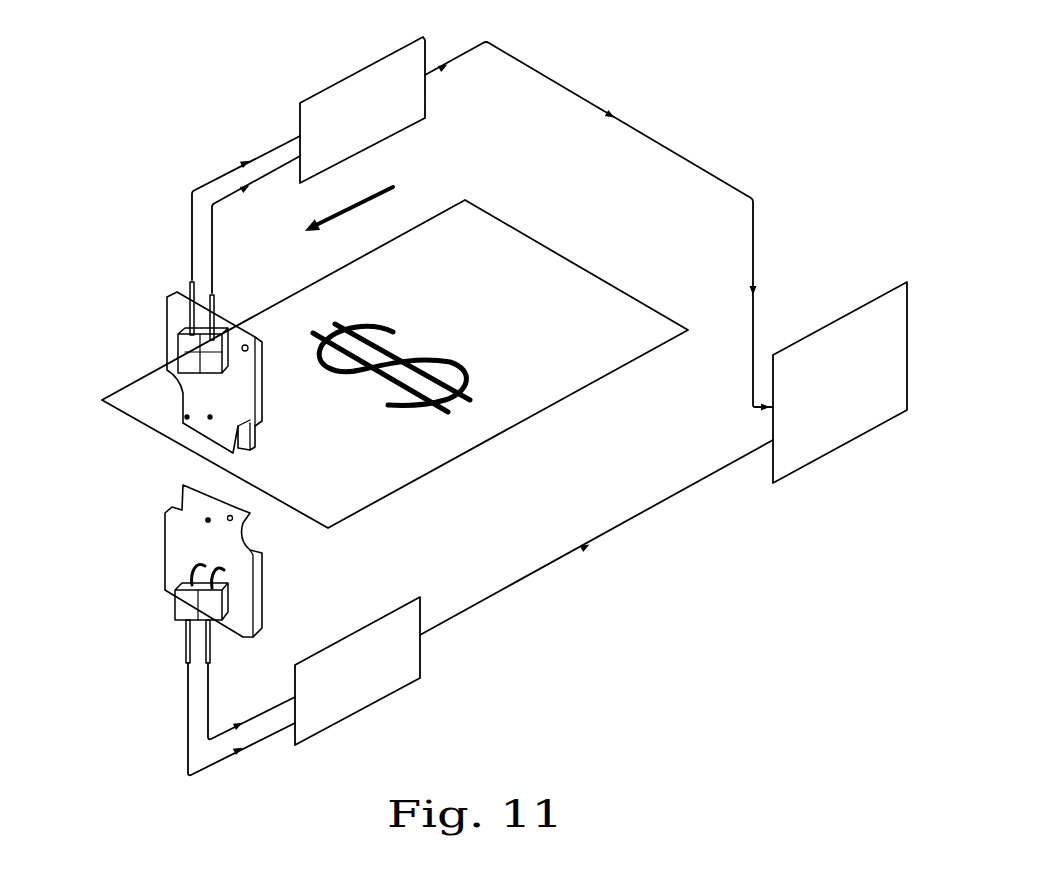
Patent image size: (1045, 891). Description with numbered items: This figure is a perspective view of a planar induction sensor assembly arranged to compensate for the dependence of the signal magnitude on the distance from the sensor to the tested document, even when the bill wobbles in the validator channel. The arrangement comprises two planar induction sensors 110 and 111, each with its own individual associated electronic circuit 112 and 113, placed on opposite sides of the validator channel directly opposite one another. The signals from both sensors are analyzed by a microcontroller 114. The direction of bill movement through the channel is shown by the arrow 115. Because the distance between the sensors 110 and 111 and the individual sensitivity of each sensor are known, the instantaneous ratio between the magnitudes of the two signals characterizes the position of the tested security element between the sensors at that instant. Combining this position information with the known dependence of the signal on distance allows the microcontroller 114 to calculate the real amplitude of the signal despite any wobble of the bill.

The planar induction sensor 110 is at (167, 362).
The planar induction sensor 111 is at (173, 548).
The electronic circuit 112 is at (385, 672).
The electronic circuit 113 is at (375, 115).
The microcontroller 114 is at (817, 438).
The arrow 115 is at (360, 202).